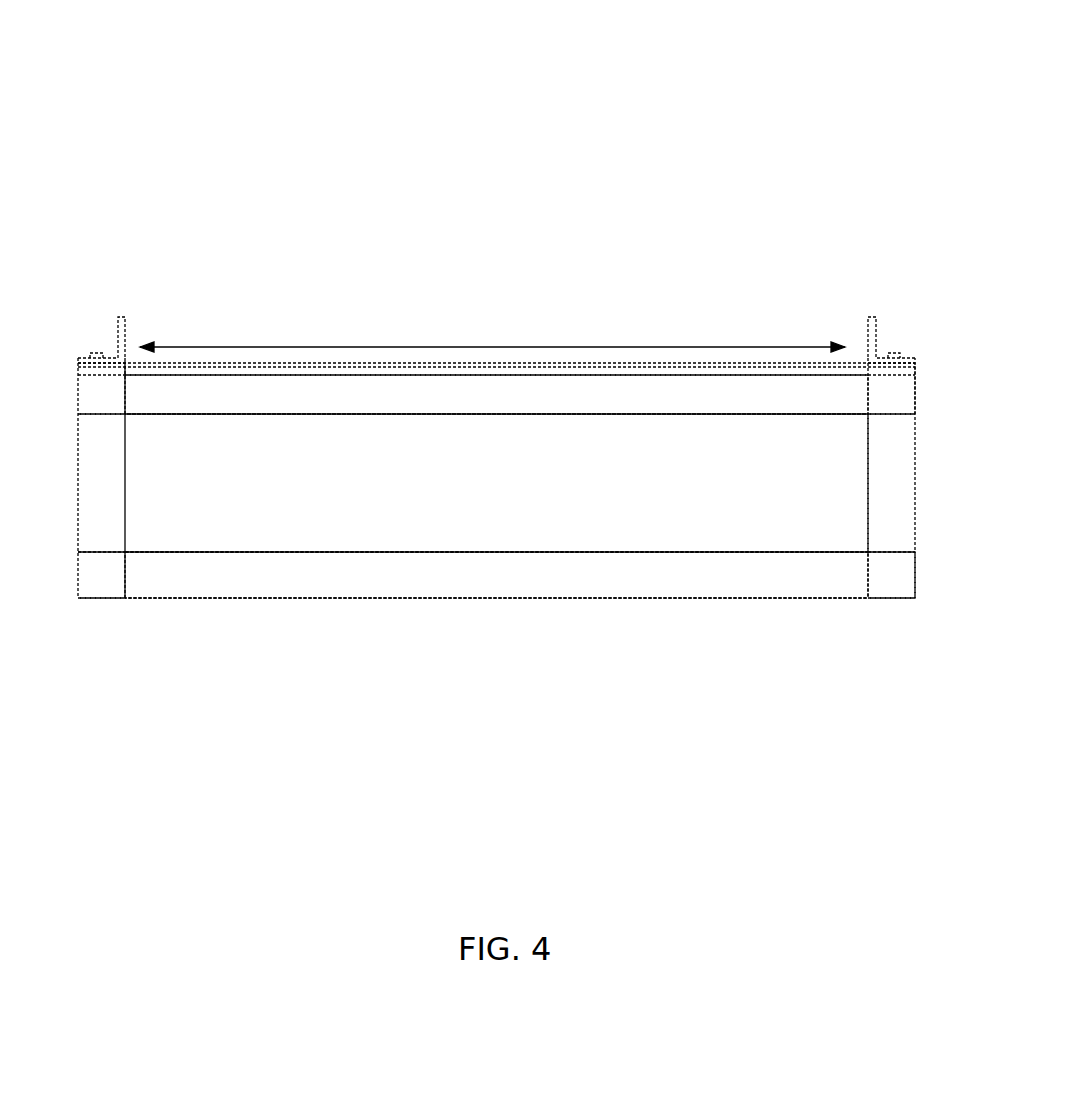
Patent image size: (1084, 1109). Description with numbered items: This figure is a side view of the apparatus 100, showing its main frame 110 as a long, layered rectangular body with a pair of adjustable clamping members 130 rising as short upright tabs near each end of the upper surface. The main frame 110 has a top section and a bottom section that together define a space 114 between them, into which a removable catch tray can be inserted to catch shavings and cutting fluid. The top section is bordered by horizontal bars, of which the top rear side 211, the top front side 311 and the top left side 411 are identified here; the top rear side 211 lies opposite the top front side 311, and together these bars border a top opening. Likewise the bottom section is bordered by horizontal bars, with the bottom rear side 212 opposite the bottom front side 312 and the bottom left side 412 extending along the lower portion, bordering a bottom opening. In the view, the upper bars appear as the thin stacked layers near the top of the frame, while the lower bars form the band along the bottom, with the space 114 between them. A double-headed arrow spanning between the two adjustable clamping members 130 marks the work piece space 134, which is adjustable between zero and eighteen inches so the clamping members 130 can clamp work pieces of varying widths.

The apparatus 100 is at (578, 78).
The main frame 110 is at (387, 578).
The space 114 is at (715, 510).
The adjustable clamping members 130 is at (127, 340).
The work piece space 134 is at (460, 345).
The top rear side 211 is at (97, 393).
The bottom rear side 212 is at (102, 595).
The top front side 311 is at (908, 393).
The bottom front side 312 is at (882, 569).
The top left side 411 is at (257, 402).
The bottom left side 412 is at (535, 575).